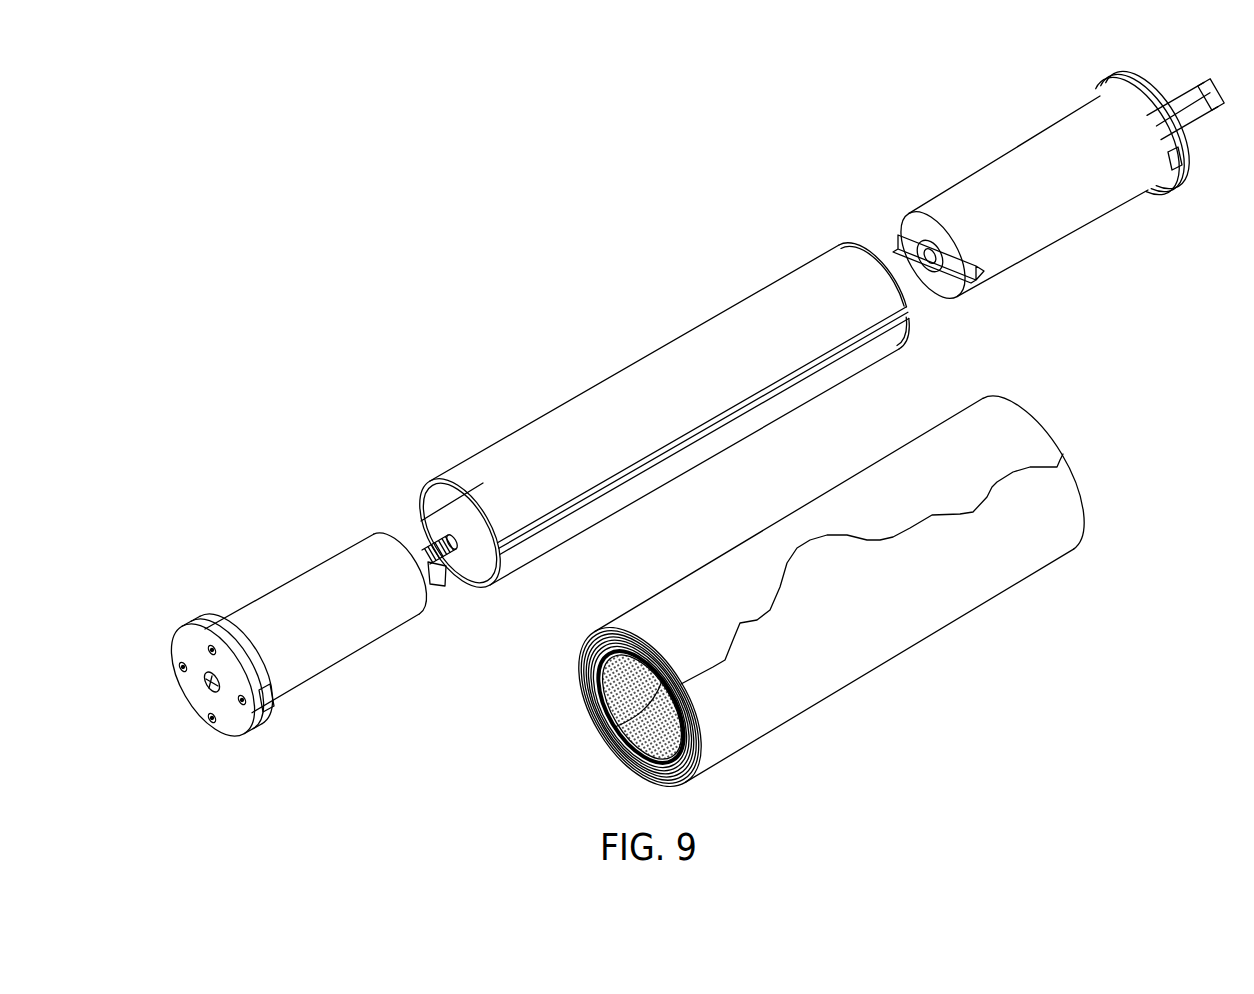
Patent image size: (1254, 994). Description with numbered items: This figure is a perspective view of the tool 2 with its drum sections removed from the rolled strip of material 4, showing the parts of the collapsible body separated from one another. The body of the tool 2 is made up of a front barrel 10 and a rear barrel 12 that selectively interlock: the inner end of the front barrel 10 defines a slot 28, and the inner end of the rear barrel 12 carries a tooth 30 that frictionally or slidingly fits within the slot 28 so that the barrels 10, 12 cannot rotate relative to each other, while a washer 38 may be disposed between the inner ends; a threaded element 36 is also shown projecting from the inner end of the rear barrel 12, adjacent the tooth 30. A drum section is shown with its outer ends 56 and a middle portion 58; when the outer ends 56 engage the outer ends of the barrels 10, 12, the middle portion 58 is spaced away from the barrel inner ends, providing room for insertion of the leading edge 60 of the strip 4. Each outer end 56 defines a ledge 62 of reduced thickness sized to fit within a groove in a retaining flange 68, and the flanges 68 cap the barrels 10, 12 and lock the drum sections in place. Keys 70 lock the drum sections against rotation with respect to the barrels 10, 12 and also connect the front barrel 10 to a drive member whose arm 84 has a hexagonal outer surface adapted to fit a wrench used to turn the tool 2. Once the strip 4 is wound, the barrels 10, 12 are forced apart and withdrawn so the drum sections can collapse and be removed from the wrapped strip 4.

The tool 2 is at (404, 295).
The strip of material 4 is at (1103, 521).
The front barrel 10 is at (971, 156).
The rear barrel 12 is at (359, 669).
The slot 28 is at (962, 272).
The tooth 30 is at (440, 588).
The threaded stud 36 is at (420, 538).
The washer 38 is at (934, 262).
The outer ends 56 is at (455, 478).
The middle portion 58 is at (611, 377).
The leading edge 60 is at (885, 531).
The ledge 62 is at (490, 503).
The retaining flange 68 is at (185, 720).
The key 70 is at (268, 707).
The arm 84 is at (1202, 87).